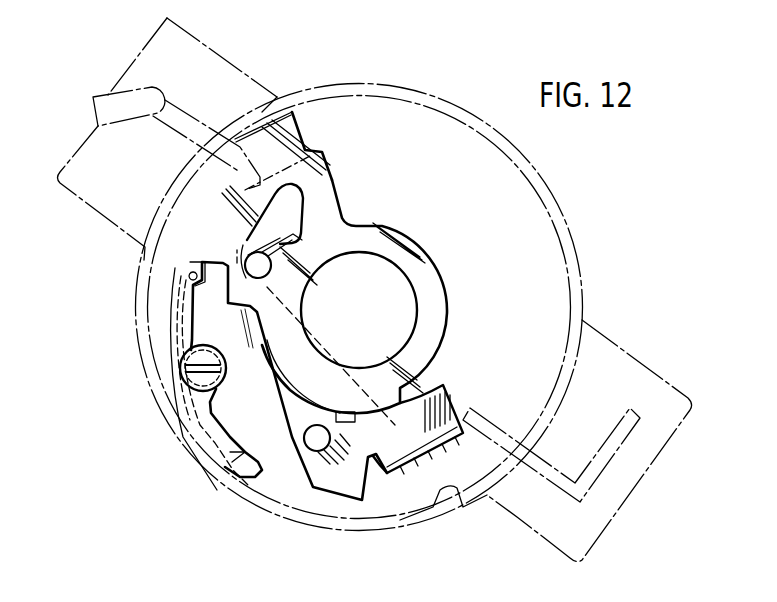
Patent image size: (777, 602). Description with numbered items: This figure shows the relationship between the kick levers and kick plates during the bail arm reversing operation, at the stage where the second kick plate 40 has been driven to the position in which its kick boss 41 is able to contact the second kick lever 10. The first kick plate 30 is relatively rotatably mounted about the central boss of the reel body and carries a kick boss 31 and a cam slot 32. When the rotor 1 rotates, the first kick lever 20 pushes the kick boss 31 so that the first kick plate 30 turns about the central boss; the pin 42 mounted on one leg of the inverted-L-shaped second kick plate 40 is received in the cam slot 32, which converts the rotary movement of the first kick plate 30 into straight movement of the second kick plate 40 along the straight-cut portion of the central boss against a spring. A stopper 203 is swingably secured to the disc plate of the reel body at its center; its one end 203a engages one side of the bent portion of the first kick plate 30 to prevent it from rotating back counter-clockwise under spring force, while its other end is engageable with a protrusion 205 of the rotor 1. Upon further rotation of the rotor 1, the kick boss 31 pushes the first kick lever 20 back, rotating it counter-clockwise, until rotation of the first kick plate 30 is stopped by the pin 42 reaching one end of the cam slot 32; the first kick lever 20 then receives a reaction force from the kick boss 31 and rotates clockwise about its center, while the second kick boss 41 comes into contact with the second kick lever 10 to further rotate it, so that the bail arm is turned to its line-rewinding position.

The rotor 1 is at (537, 177).
The second kick lever 10 is at (547, 470).
The first kick lever 20 is at (210, 137).
The first kick plate 30 is at (410, 242).
The kick boss 31 is at (290, 132).
The cam slot 32 is at (266, 205).
The second kick plate 40 is at (327, 483).
The kick boss 41 is at (413, 463).
The pin 42 is at (257, 268).
The stopper 203 is at (212, 430).
The one end of stopper 203a is at (200, 264).
The protrusion 205 is at (453, 493).